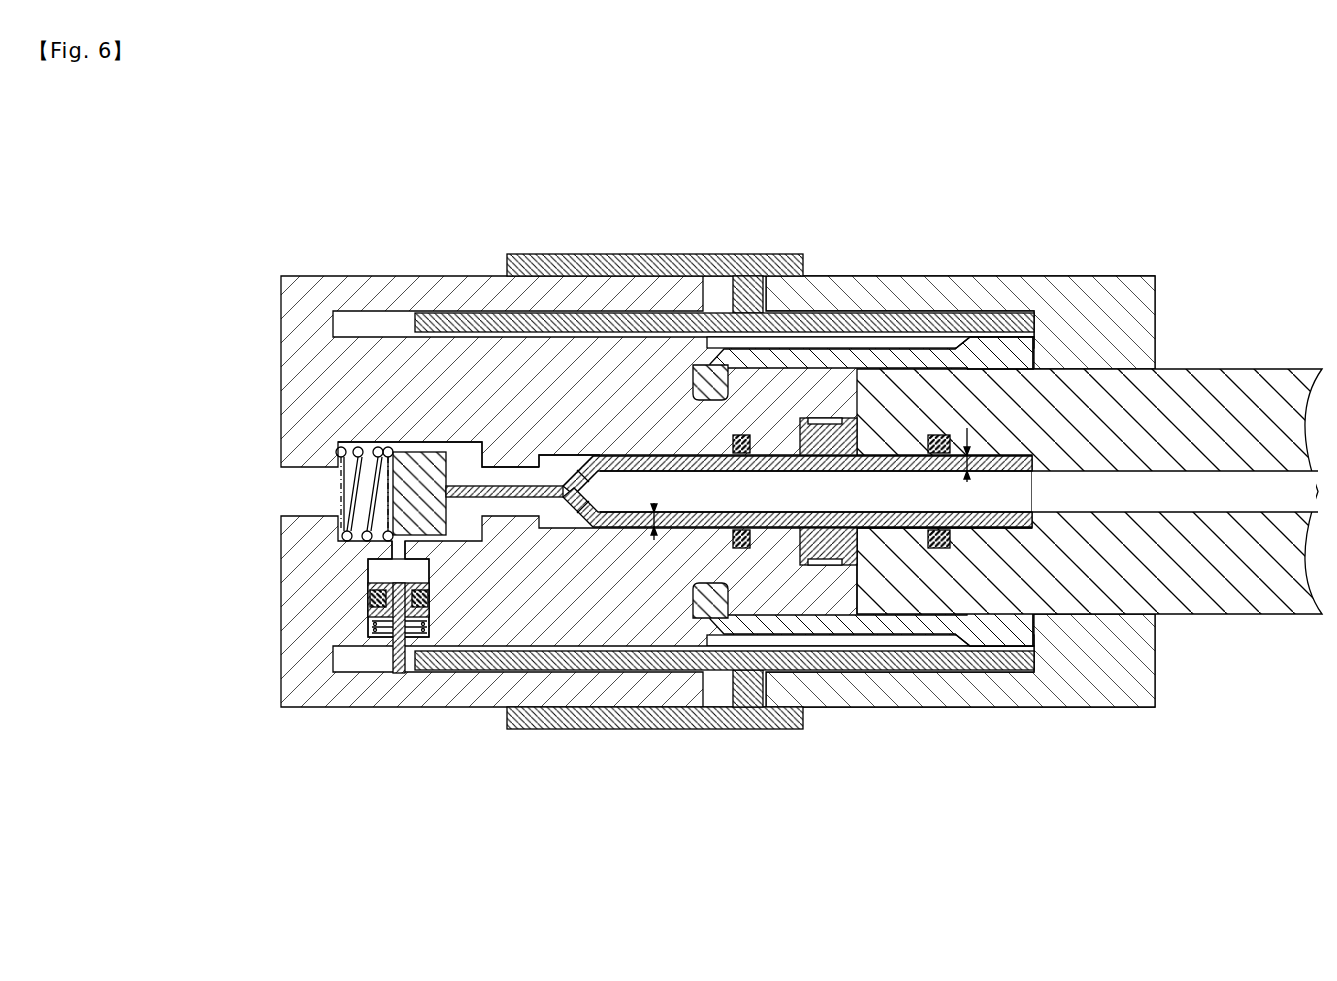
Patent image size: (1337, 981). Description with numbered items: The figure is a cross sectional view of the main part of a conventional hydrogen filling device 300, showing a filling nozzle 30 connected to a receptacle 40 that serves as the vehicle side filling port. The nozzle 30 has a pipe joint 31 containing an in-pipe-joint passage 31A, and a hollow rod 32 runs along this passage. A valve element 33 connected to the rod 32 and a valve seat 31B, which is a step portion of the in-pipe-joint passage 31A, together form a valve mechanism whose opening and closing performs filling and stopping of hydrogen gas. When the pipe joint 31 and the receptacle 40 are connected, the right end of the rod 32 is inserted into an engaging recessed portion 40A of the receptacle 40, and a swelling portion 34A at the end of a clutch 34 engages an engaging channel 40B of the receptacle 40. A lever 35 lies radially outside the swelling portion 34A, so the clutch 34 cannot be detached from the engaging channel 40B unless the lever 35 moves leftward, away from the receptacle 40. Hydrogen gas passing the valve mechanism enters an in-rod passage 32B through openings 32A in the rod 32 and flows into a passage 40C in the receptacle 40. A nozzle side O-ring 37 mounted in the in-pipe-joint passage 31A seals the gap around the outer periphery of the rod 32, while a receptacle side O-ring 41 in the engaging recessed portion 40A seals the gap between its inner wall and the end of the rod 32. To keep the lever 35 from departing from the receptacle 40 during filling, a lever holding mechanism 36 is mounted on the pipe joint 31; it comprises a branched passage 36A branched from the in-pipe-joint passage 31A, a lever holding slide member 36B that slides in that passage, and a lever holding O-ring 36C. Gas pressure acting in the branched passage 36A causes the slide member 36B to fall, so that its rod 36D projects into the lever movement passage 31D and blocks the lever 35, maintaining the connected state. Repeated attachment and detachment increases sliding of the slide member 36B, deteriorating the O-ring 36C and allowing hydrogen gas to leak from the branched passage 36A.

The filling nozzle 30 is at (494, 207).
The hydrogen filling device 300 is at (1105, 198).
The pipe joint 31 is at (280, 345).
The in-pipe-joint passage 31A is at (493, 478).
The valve seat 31B is at (478, 457).
The lever movement passage 31D is at (440, 660).
The rod 32 is at (652, 462).
The openings 32A is at (590, 472).
The in-rod passage 32B is at (685, 497).
The valve element 33 is at (420, 450).
The clutch 34 is at (873, 360).
The swelling portion 34A is at (1000, 350).
The lever 35 is at (815, 318).
The lever holding mechanism 36 is at (352, 622).
The branched passage 36A is at (395, 566).
The lever holding slide member 36B is at (372, 588).
The lever holding O-ring 36C is at (372, 600).
The rod of the lever holding slide member 36D is at (402, 640).
The nozzle side O-ring 37 is at (755, 548).
The receptacle 40 is at (1200, 369).
The engaging recessed portion 40A is at (1010, 524).
The engaging channel 40B is at (1028, 378).
The passage 40C is at (1220, 490).
The receptacle side O-ring 41 is at (937, 550).